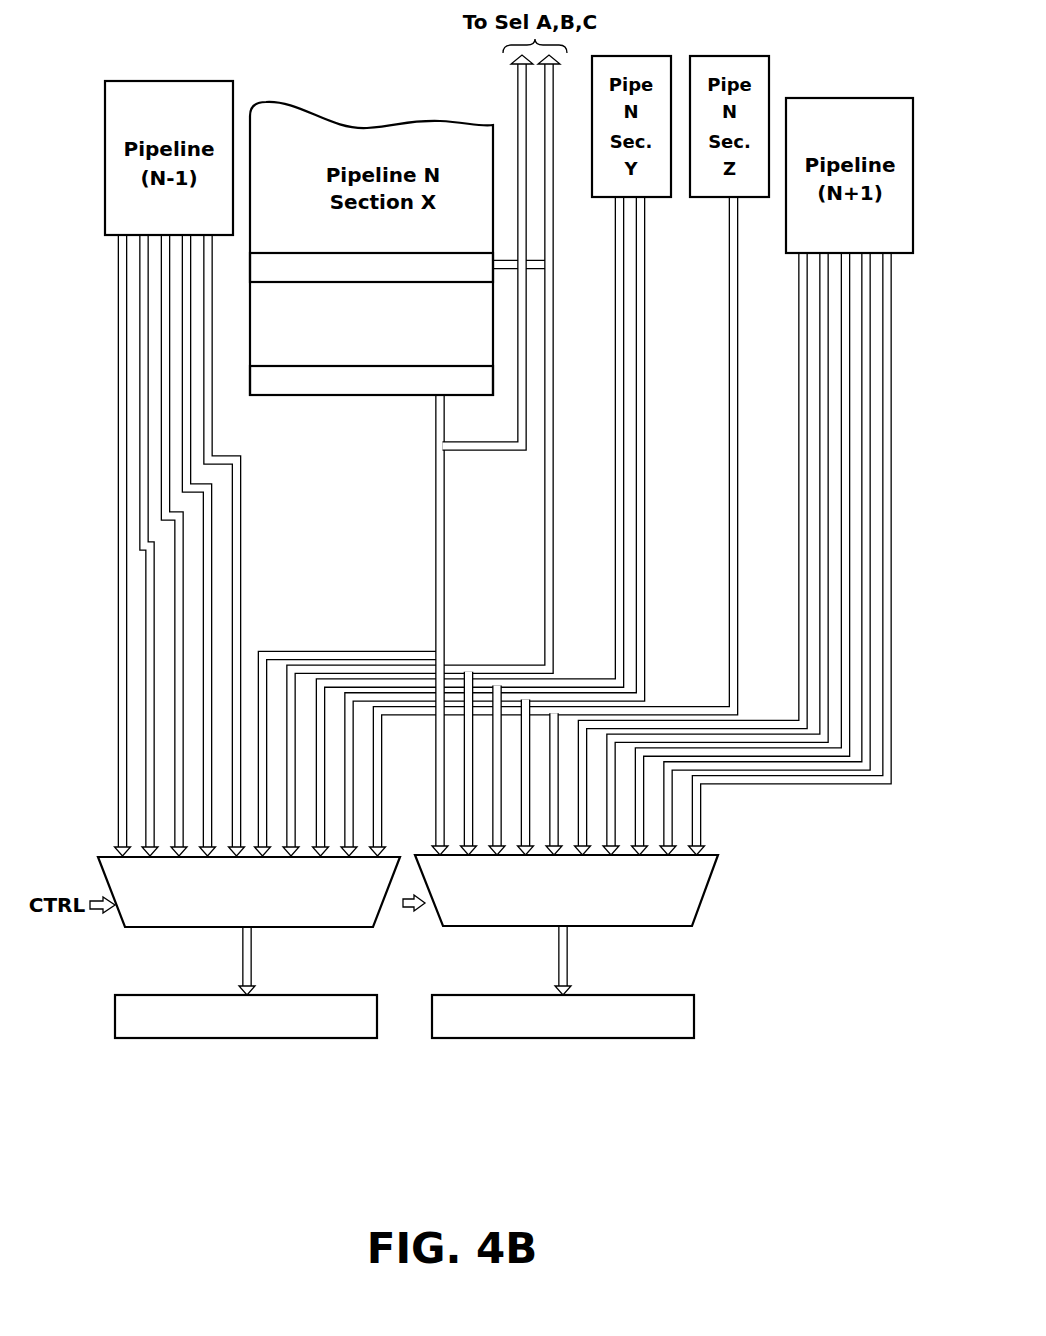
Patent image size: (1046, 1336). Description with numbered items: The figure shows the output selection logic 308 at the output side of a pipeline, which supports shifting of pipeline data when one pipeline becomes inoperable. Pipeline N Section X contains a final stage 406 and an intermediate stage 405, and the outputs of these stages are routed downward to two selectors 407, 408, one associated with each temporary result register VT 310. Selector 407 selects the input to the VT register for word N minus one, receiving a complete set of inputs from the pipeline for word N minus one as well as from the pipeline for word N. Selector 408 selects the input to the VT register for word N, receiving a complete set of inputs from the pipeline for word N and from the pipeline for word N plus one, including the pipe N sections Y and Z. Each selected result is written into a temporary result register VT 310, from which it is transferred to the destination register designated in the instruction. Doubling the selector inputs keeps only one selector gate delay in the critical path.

The intermediate stage 405 is at (371, 380).
The final stage 406 is at (371, 267).
The selector 407 is at (374, 879).
The selector 408 is at (689, 881).
The output selection logic 308 is at (449, 892).
The temporary result register VT 310 is at (740, 990).